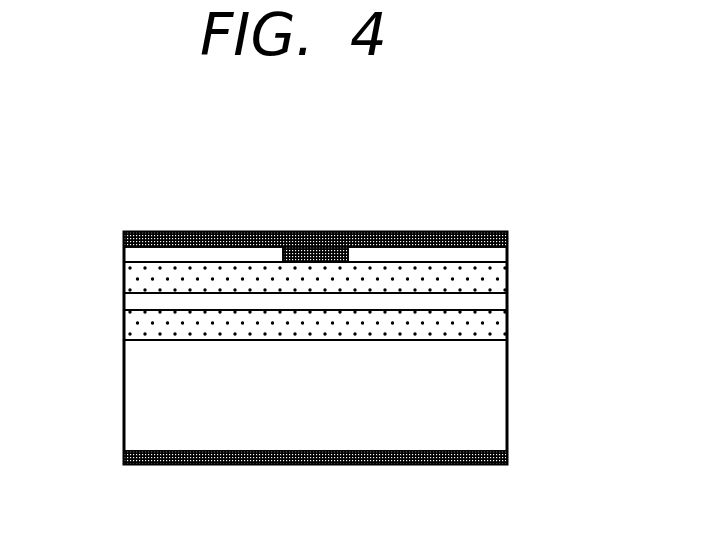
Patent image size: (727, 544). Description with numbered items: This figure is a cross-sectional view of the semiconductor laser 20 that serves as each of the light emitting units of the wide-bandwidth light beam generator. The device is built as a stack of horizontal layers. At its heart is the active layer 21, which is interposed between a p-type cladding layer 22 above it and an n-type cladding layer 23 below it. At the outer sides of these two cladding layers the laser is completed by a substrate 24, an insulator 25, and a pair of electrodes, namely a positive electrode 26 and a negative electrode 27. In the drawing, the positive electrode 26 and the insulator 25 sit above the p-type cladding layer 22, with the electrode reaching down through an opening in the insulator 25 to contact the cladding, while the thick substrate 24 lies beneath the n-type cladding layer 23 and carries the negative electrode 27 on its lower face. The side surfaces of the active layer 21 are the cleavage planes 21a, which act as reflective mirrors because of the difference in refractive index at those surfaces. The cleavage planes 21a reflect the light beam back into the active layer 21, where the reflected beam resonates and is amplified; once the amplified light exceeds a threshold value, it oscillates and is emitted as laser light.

The semiconductor laser 20 is at (178, 233).
The active layer 21 is at (417, 305).
The cleavage planes 21a is at (124, 298).
The p-type cladding layer 22 is at (503, 277).
The n-type cladding layer 23 is at (500, 326).
The substrate 24 is at (500, 422).
The insulator 25 is at (138, 254).
The positive electrode 26 is at (140, 232).
The negative electrode 27 is at (465, 465).